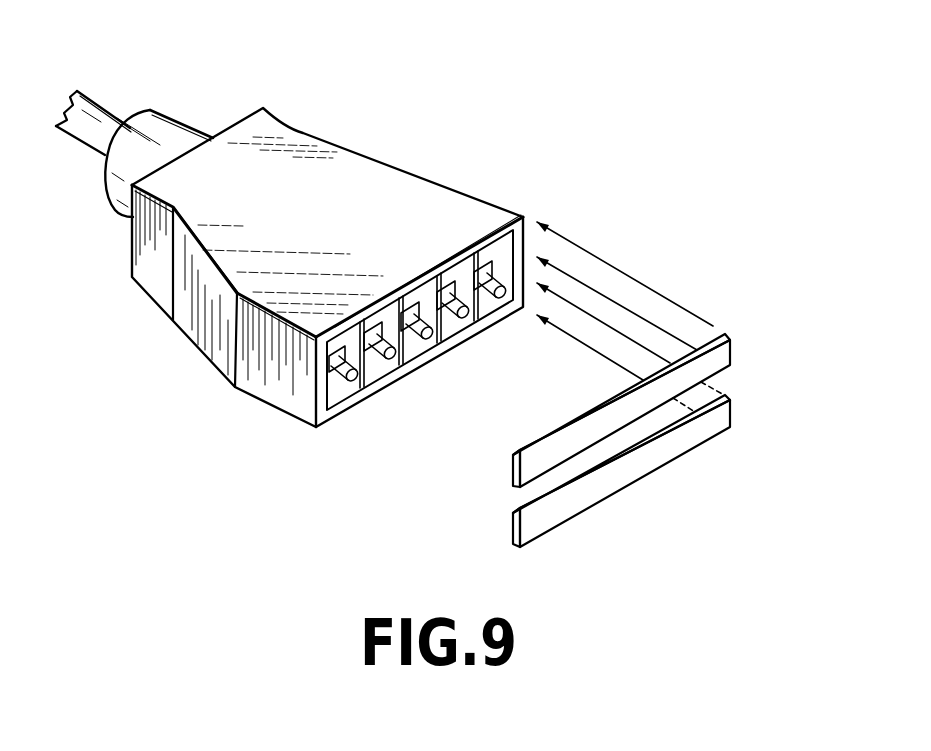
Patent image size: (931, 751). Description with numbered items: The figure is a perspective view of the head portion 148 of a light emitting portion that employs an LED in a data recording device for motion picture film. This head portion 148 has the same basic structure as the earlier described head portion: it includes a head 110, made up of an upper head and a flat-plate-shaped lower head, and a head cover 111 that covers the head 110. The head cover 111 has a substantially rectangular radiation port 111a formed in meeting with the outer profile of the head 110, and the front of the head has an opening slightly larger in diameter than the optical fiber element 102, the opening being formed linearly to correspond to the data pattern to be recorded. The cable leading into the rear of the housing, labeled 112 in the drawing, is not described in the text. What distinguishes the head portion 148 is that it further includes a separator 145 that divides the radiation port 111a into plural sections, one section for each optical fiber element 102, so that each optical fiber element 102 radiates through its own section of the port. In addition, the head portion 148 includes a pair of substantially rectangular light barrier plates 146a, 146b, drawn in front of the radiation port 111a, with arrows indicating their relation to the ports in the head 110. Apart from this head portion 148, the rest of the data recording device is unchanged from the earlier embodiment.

The optical fiber element 102 is at (421, 329).
The head 110 is at (513, 247).
The head cover 111 is at (350, 157).
The radiation port 111a is at (330, 435).
The optical fiber cable 112 is at (101, 118).
The separator 145 is at (389, 322).
The light barrier plate 146a is at (724, 352).
The light barrier plate 146b is at (675, 448).
The head portion 148 is at (573, 128).